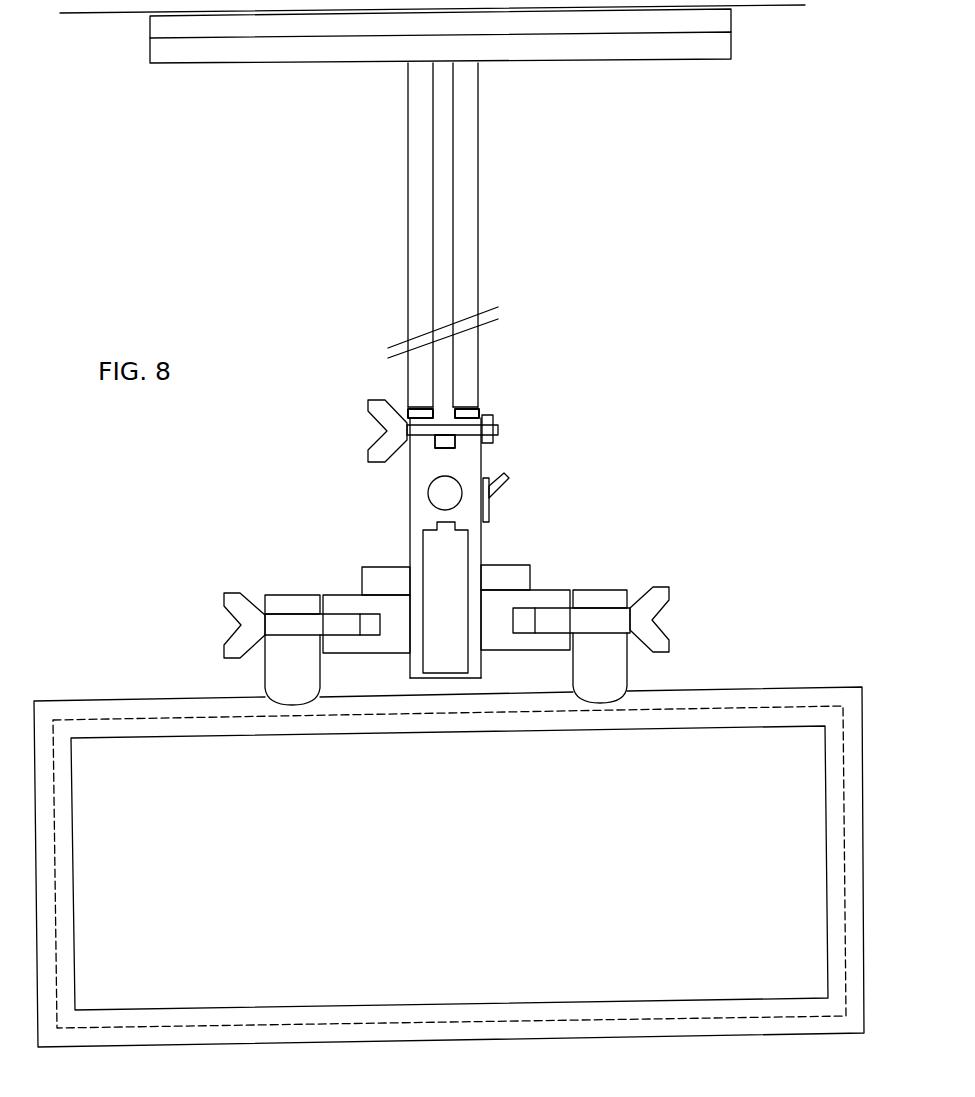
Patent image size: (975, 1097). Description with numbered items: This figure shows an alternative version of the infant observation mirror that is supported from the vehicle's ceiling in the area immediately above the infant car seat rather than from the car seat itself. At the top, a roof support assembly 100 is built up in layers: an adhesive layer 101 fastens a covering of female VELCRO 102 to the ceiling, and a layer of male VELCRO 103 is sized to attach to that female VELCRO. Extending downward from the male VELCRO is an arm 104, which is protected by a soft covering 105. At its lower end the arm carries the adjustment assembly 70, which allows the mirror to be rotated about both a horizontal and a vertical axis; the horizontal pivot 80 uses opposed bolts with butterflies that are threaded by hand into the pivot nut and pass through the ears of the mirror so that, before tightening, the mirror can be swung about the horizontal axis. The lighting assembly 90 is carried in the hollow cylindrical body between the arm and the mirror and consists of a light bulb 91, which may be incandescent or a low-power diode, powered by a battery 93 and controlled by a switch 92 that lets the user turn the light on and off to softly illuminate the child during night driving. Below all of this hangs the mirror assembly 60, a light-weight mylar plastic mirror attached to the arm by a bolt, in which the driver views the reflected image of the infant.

The mirror assembly 60 is at (110, 668).
The adjustment assembly 70 is at (635, 518).
The horizontal pivot 80 is at (733, 603).
The lighting assembly 90 is at (527, 522).
The light bulb 91 is at (443, 493).
The switch 92 is at (515, 478).
The battery 93 is at (443, 558).
The roof support assembly 100 is at (290, 195).
The adhesive layer 101 is at (251, 16).
The female VELCRO covering 102 is at (543, 25).
The male VELCRO layer 103 is at (674, 45).
The arm 104 is at (443, 186).
The soft covering 105 is at (465, 244).